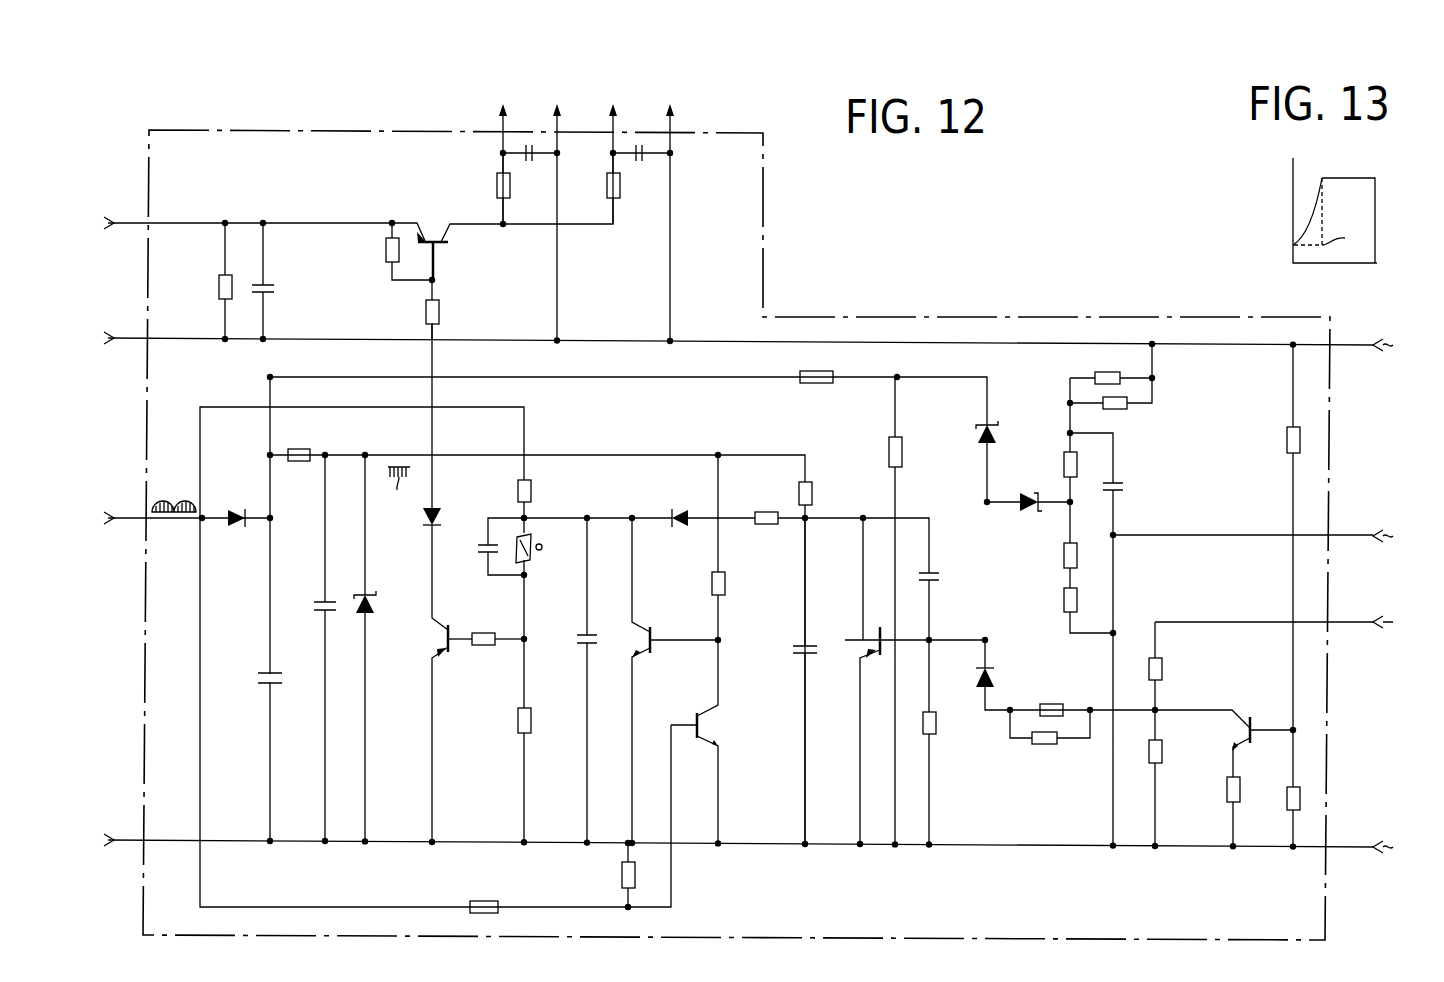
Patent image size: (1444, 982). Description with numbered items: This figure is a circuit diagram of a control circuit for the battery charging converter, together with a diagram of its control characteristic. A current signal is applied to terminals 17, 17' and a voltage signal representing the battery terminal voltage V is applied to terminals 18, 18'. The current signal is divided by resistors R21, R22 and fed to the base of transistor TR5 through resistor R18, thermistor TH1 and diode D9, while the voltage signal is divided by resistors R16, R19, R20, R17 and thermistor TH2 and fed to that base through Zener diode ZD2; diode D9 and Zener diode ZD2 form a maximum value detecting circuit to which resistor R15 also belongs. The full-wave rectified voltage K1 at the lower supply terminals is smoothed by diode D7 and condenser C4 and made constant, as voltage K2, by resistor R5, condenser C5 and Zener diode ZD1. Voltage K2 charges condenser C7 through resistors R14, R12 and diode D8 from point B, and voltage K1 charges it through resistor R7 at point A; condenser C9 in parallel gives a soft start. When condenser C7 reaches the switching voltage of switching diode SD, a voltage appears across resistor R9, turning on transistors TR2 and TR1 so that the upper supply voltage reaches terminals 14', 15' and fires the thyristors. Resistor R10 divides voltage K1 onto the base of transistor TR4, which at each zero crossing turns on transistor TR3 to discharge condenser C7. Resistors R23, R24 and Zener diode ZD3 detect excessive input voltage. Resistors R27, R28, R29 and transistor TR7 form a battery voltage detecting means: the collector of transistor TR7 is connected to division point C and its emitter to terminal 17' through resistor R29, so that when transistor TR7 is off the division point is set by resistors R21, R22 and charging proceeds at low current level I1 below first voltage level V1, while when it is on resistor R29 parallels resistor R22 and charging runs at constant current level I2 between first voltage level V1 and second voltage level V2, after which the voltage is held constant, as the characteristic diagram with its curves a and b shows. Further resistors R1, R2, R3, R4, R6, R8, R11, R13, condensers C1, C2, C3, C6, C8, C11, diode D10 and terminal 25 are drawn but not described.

In FIG. 12, the resistor R1 is at (497, 188).
In FIG. 12, the resistor R2 is at (607, 188).
In FIG. 12, the resistor R3 is at (385, 250).
In FIG. 12, the resistor R4 is at (212, 287).
In FIG. 12, the resistor R5 is at (310, 449).
In FIG. 12, the resistor R6 is at (440, 311).
In FIG. 12, the resistor R7 is at (533, 487).
In FIG. 12, the resistor R8 is at (482, 646).
In FIG. 12, the resistor R9 is at (532, 722).
In FIG. 12, the resistor R10 is at (485, 901).
In FIG. 12, the resistor R11 is at (622, 872).
In FIG. 12, the resistor R12 is at (768, 526).
In FIG. 12, the resistor R13 is at (727, 585).
In FIG. 12, the resistor R14 is at (814, 494).
In FIG. 12, the resistor R15 is at (938, 723).
In FIG. 12, the resistor R16 is at (1122, 410).
In FIG. 12, the resistor R17 is at (1063, 600).
In FIG. 12, the resistor R18 is at (1054, 703).
In FIG. 12, the resistor R19 is at (1062, 460).
In FIG. 12, the resistor R20 is at (1063, 562).
In FIG. 12, the resistor R21 is at (1163, 665).
In FIG. 12, the resistor R22 is at (1163, 752).
In FIG. 12, the resistor R23 is at (818, 384).
In FIG. 12, the resistor R24 is at (889, 452).
In FIG. 12, the resistor R27 is at (1287, 440).
In FIG. 12, the resistor R28 is at (1286, 792).
In FIG. 12, the resistor R29 is at (1226, 790).
In FIG. 12, the capacitor C1 is at (530, 163).
In FIG. 12, the capacitor C2 is at (640, 163).
In FIG. 12, the capacitor C3 is at (276, 290).
In FIG. 12, the condenser C4 is at (257, 677).
In FIG. 12, the condenser C5 is at (313, 606).
In FIG. 12, the capacitor C6 is at (477, 548).
In FIG. 12, the condenser C7 is at (577, 640).
In FIG. 12, the capacitor C8 is at (790, 648).
In FIG. 12, the condenser C9 is at (941, 577).
In FIG. 12, the capacitor C11 is at (1125, 488).
In FIG. 12, the diode D7 is at (241, 508).
In FIG. 12, the diode D8 is at (676, 528).
In FIG. 12, the diode D9 is at (998, 673).
In FIG. 12, the diode D10 is at (434, 506).
In FIG. 12, the Zener diode ZD1 is at (372, 592).
In FIG. 12, the Zener diode ZD2 is at (1028, 492).
In FIG. 12, the Zener diode ZD3 is at (977, 428).
In FIG. 12, the transistor TR1 is at (422, 235).
In FIG. 12, the transistor TR2 is at (444, 640).
In FIG. 12, the transistor TR3 is at (653, 628).
In FIG. 12, the transistor TR4 is at (704, 727).
In FIG. 12, the transistor TR5 is at (874, 634).
In FIG. 12, the transistor TR7 is at (1242, 734).
In FIG. 12, the thermistor TH1 is at (1043, 745).
In FIG. 12, the thermistor TH2 is at (1099, 372).
In FIG. 12, the full-wave rectified d-c voltage K1 is at (180, 490).
In FIG. 12, the constant voltage K2 is at (393, 494).
In FIG. 12, the switching diode SD is at (534, 560).
In FIG. 12, the point A is at (530, 518).
In FIG. 13, the point A is at (1267, 178).
In FIG. 12, the point B is at (810, 522).
In FIG. 12, the division point C is at (1158, 712).
In FIG. 12, the terminal 14' is at (508, 151).
In FIG. 12, the terminal 15' is at (618, 151).
In FIG. 12, the common terminal 25 is at (614, 210).
In FIG. 12, the terminal 17 is at (1411, 622).
In FIG. 12, the terminal 17' is at (1415, 848).
In FIG. 12, the terminal 18 is at (1411, 345).
In FIG. 12, the terminal 18' is at (1415, 536).
In FIG. 13, the charging characteristic a is at (1310, 216).
In FIG. 13, the characteristic curve b is at (1345, 238).
In FIG. 13, the charging current level I1 is at (1283, 244).
In FIG. 13, the charging current level I2 is at (1285, 174).
In FIG. 13, the first voltage level V1 is at (1329, 276).
In FIG. 13, the second voltage level V2 is at (1379, 276).
In FIG. 13, the battery terminal voltage V is at (1368, 300).